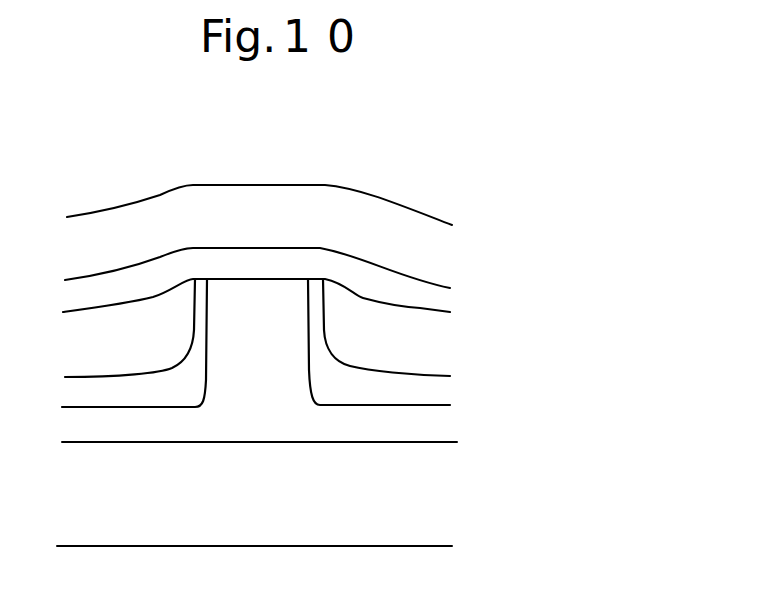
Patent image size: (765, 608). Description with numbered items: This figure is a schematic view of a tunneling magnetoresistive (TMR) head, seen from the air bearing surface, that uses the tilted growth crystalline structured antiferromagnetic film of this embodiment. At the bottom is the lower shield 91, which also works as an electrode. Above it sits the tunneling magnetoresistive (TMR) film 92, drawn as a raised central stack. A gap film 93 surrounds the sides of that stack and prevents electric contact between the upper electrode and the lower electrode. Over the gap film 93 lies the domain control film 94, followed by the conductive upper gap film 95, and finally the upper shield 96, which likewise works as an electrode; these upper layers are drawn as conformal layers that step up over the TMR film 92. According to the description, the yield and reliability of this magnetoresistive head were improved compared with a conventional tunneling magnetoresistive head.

The lower shield 91 is at (420, 518).
The tunneling magnetoresistive (TMR) film 92 is at (278, 360).
The gap film 93 is at (360, 385).
The domain control film 94 is at (413, 318).
The conductive upper gap film 95 is at (380, 282).
The upper shield 96 is at (328, 223).